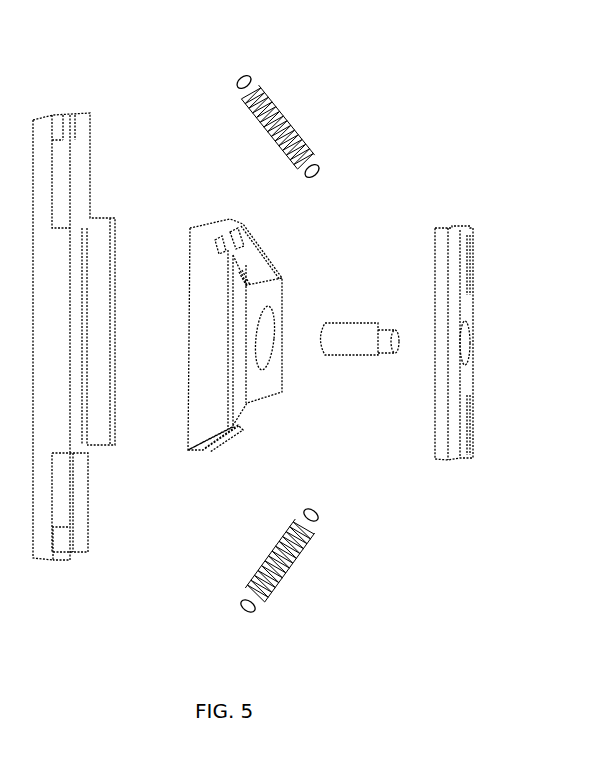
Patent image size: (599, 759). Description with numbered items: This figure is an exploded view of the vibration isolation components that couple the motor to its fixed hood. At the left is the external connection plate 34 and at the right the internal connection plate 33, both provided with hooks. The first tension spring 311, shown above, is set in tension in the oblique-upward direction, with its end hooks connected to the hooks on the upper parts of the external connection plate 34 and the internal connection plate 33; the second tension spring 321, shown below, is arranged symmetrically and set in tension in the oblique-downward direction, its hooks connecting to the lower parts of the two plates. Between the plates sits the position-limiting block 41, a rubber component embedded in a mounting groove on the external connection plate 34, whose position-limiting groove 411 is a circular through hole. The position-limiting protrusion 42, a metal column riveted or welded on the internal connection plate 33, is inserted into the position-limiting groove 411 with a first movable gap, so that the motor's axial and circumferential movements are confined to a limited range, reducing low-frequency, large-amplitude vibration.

The external connection plate 34 is at (57, 275).
The first tension spring 311 is at (300, 113).
The position-limiting block 41 is at (252, 270).
The position-limiting groove 411 is at (265, 337).
The position-limiting protrusion 42 is at (355, 342).
The internal connection plate 33 is at (453, 372).
The second tension spring 321 is at (287, 583).